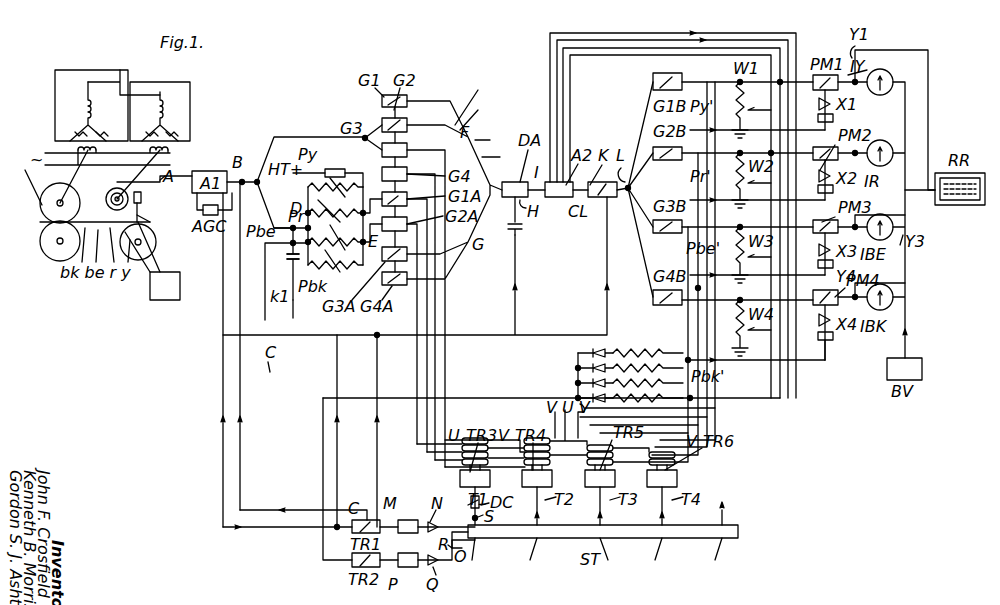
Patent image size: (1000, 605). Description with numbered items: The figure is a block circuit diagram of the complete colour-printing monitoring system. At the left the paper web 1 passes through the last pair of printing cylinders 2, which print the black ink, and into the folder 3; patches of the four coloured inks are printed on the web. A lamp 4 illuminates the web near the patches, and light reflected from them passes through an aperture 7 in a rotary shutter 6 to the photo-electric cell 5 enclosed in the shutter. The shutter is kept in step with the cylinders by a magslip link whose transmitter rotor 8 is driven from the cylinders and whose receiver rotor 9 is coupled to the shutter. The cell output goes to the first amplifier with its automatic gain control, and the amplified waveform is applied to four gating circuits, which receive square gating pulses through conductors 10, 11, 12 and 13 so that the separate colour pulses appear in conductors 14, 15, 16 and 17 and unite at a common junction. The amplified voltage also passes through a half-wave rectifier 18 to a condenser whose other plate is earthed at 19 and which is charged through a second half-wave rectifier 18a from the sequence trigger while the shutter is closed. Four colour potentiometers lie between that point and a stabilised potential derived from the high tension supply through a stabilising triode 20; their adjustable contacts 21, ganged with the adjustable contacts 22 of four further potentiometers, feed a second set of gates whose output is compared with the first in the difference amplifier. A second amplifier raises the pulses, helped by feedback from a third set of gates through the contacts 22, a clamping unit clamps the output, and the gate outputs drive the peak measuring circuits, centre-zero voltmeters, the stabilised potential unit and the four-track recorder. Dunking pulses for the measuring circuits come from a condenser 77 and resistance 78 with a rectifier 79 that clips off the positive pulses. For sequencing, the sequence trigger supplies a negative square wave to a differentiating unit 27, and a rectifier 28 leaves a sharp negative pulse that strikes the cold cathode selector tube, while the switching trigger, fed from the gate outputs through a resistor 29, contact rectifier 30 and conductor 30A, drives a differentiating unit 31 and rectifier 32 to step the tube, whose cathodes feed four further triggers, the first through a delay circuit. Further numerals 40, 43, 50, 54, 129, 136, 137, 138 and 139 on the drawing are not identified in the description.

The paper web 1 is at (22, 200).
The printing cylinders 2 is at (40, 236).
The folder 3 is at (175, 278).
The lamp 4 is at (142, 215).
The photo-electric cell 5 is at (144, 186).
The rotary shutter 6 is at (106, 201).
The aperture 7 is at (142, 196).
The transmitter rotor 8 is at (74, 176).
The receiver rotor 9 is at (172, 152).
The conductor 10 is at (438, 348).
The conductor 11 is at (430, 365).
The conductor 12 is at (417, 348).
The conductor 13 is at (427, 365).
The conductor 14 is at (479, 111).
The conductor 15 is at (476, 99).
The conductor 16 is at (493, 141).
The conductor 17 is at (502, 157).
The half-wave rectifier 18 is at (283, 222).
The second half-wave rectifier 18a is at (285, 262).
The earth connection 19 is at (294, 313).
The stabilising triode 20 is at (328, 166).
The adjustable contacts 21 is at (324, 230).
The adjustable contacts 22 is at (752, 118).
The differentiating unit 27 is at (410, 518).
The rectifier 28 is at (470, 496).
The resistor 29 is at (628, 352).
The contact rectifier 30 is at (598, 352).
The conductor 30A is at (323, 547).
The differentiating unit 31 is at (408, 575).
The rectifier 32 is at (446, 574).
The conductor 40 is at (223, 258).
The conductor 43 is at (302, 135).
The automatic gain control 50 is at (200, 214).
The capacitor 54 is at (520, 242).
The condenser 77 is at (849, 354).
The resistance 78 is at (840, 358).
The rectifier 79 is at (814, 225).
The switch contact 129 is at (490, 555).
The switch contact 136 is at (538, 555).
The switch contact 137 is at (618, 555).
The switch contact 138 is at (661, 555).
The switch contact 139 is at (713, 555).